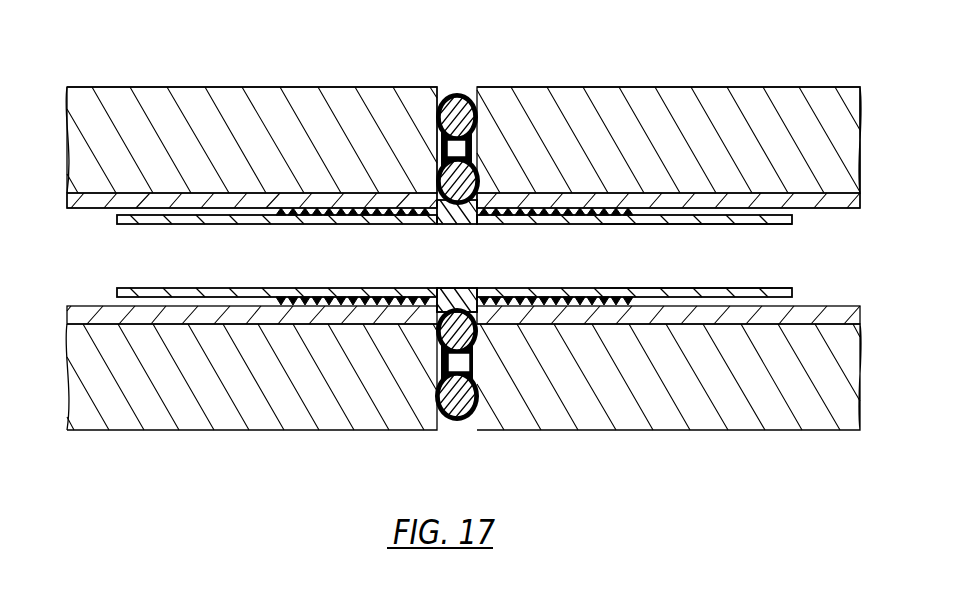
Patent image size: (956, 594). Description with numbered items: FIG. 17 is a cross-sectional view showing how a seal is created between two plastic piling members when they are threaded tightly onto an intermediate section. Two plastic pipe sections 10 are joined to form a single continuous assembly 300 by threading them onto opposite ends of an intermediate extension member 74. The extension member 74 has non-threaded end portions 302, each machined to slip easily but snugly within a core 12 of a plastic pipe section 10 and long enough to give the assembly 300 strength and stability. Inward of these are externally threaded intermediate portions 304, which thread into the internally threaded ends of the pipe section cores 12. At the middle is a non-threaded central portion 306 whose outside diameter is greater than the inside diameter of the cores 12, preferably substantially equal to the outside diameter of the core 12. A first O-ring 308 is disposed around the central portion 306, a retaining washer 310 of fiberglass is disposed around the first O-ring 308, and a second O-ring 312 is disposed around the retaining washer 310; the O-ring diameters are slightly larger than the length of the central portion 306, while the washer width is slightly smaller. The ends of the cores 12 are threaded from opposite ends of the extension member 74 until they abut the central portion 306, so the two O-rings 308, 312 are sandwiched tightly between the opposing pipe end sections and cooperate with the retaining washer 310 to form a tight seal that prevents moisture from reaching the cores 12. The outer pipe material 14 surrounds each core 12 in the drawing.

The plastic pipe section 10 is at (226, 52).
The core 12 is at (99, 210).
The panel substrate 14 is at (285, 97).
The intermediate extension member 74 is at (652, 236).
The assembly 300 is at (472, 448).
The non-threaded end portion 302 is at (137, 226).
The externally threaded intermediate portion 304 is at (312, 216).
The non-threaded central portion 306 is at (445, 224).
The first O-ring 308 is at (478, 182).
The retaining washer 310 is at (446, 147).
The second O-ring 312 is at (458, 97).